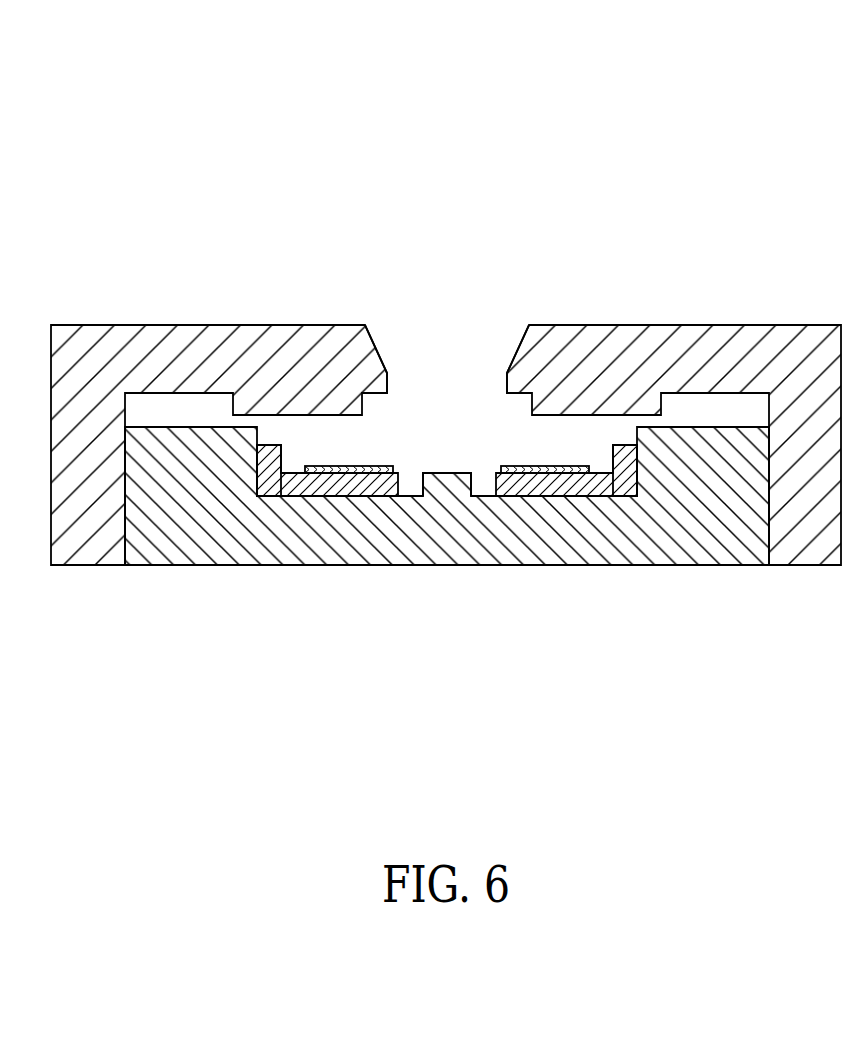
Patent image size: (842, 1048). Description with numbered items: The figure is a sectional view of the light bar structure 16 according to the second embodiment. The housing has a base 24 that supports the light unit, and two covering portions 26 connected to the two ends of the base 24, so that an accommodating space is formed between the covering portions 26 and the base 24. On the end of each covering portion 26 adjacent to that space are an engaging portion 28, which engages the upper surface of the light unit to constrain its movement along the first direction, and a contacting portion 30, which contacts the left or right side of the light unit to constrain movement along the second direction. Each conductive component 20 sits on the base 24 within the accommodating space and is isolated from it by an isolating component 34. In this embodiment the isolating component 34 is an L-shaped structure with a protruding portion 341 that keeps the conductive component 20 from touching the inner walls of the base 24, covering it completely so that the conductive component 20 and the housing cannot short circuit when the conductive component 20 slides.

The light bar structure 16 is at (608, 85).
The conductive component 20 is at (318, 470).
The base 24 is at (710, 540).
The covering portion 26 is at (163, 357).
The engaging portion 28 is at (374, 380).
The contacting portion 30 is at (315, 402).
The isolating component 34 is at (362, 485).
The protruding portion 341 is at (270, 447).